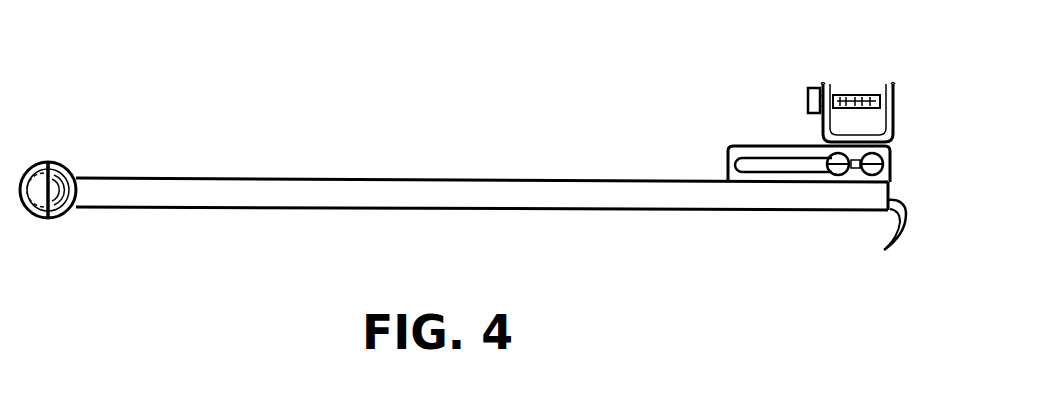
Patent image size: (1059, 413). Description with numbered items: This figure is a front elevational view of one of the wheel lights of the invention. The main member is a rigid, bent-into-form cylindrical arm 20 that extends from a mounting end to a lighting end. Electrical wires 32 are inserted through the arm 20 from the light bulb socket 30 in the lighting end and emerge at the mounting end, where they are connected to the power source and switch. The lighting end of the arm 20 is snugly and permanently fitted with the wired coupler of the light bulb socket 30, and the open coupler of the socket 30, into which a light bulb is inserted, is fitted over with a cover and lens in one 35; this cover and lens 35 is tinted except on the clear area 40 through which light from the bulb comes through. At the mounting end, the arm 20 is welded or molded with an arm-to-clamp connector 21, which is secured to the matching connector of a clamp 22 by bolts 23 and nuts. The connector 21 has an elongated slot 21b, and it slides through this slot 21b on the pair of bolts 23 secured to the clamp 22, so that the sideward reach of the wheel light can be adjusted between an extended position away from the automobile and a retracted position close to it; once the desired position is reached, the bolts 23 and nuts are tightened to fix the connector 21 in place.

The cylindrical arm 20 is at (340, 192).
The arm-to-clamp connector 21 is at (728, 143).
The elongated slot 21b is at (780, 165).
The clamp 22 is at (828, 82).
The bolts 23 is at (872, 174).
The light bulb socket 30 is at (65, 212).
The electrical wires 32 is at (888, 237).
The cover and lens in one 35 is at (38, 217).
The clear area 40 is at (72, 170).